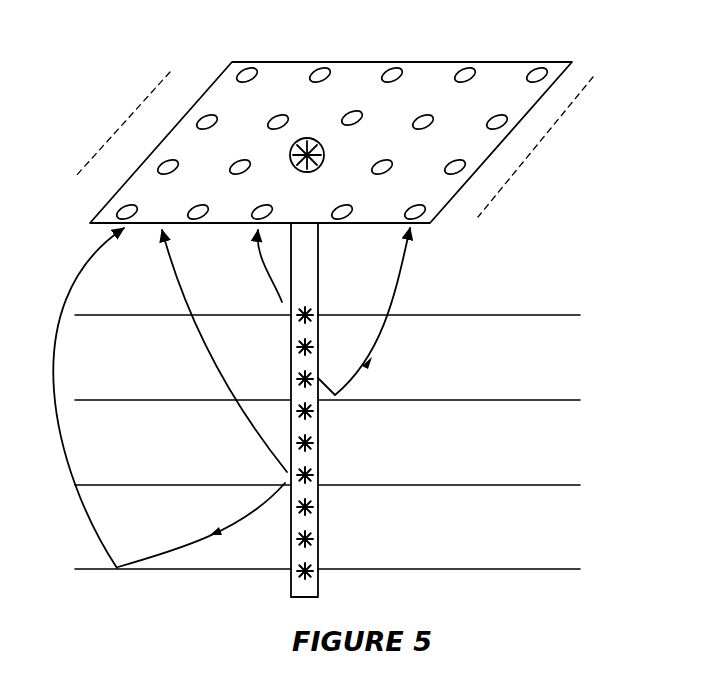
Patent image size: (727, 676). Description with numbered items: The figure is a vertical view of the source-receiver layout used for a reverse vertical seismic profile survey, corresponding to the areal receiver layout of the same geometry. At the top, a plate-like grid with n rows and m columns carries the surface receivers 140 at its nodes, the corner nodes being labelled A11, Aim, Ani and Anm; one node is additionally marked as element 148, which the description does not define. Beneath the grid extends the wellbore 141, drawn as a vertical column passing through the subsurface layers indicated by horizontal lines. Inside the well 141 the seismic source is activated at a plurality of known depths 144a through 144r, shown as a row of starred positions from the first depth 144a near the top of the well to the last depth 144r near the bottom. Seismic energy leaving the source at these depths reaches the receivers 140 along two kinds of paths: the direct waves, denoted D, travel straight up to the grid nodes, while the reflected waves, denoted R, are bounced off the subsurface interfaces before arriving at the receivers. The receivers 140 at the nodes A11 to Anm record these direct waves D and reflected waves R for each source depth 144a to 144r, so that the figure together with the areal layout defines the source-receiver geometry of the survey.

The selected array element / sensor 148 is at (320, 131).
The receivers 140 is at (337, 410).
The wellbore 141 is at (345, 443).
The depth 144a is at (267, 332).
The depth 144r is at (350, 559).
The grid node A11 is at (200, 62).
The grid node Aim is at (578, 56).
The grid node Ani is at (83, 198).
The grid node Anm is at (460, 241).
The reflected waves R is at (235, 398).
The direct waves D is at (224, 351).